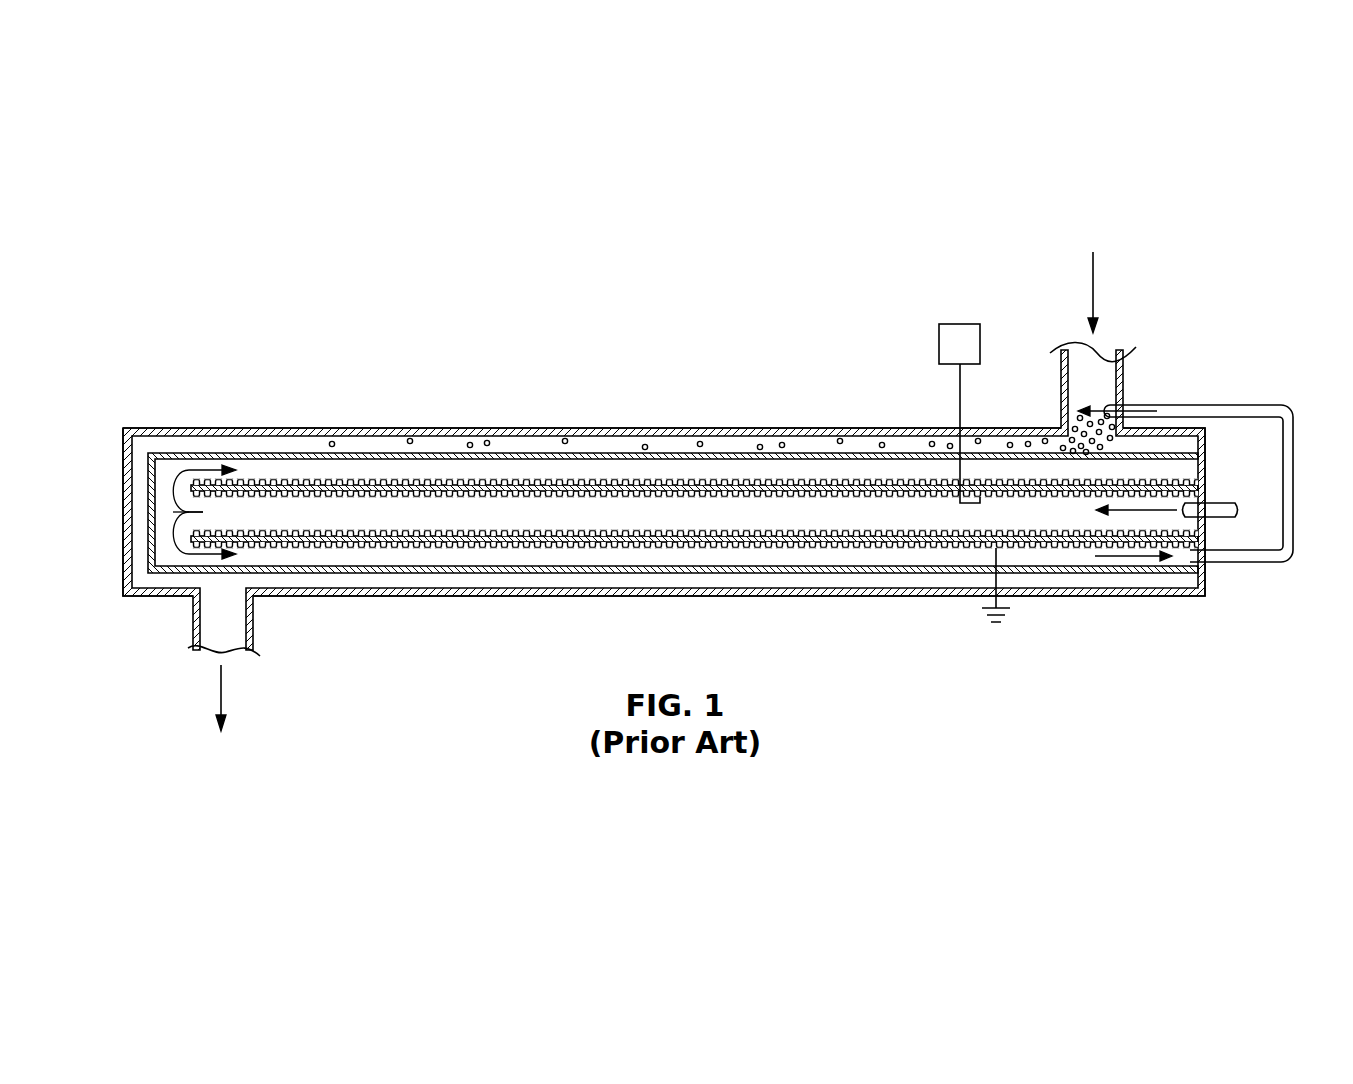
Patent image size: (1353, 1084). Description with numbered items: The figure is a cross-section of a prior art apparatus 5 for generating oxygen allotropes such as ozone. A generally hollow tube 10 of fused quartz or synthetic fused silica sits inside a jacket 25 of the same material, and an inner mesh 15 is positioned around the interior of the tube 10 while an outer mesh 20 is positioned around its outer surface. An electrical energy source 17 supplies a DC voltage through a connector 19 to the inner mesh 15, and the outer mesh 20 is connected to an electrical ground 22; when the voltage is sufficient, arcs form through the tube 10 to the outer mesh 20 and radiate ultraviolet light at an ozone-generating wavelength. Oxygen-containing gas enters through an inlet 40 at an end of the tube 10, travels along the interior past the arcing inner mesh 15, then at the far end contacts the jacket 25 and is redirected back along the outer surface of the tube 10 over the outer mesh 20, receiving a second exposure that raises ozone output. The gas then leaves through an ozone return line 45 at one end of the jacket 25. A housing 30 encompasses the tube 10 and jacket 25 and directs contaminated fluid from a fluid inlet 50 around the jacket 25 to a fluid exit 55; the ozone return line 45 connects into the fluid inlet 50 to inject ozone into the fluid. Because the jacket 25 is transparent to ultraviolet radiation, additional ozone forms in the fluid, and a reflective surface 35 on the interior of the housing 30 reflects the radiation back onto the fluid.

The apparatus 5 is at (271, 300).
The tube 10 is at (246, 478).
The inner mesh 15 is at (333, 495).
The electrical energy source 17 is at (960, 324).
The connector 19 is at (958, 403).
The outer mesh 20 is at (441, 548).
The electrical ground 22 is at (995, 578).
The jacket 25 is at (585, 453).
The housing 30 is at (731, 428).
The reflective surface 35 is at (127, 517).
The inlet 40 is at (1218, 503).
The ozone return line 45 is at (1295, 483).
The fluid inlet 50 is at (1125, 373).
The fluid exit 55 is at (193, 620).